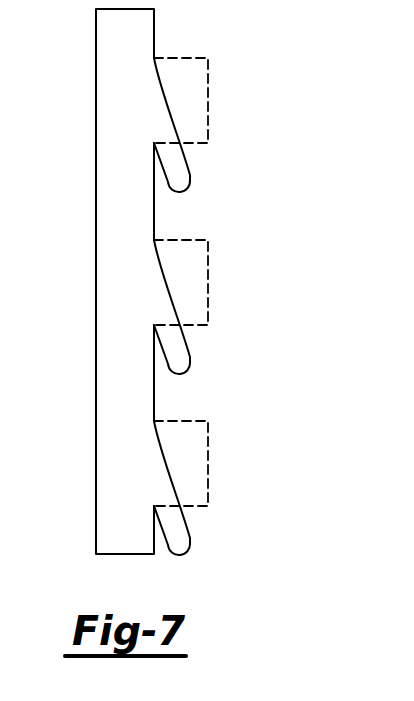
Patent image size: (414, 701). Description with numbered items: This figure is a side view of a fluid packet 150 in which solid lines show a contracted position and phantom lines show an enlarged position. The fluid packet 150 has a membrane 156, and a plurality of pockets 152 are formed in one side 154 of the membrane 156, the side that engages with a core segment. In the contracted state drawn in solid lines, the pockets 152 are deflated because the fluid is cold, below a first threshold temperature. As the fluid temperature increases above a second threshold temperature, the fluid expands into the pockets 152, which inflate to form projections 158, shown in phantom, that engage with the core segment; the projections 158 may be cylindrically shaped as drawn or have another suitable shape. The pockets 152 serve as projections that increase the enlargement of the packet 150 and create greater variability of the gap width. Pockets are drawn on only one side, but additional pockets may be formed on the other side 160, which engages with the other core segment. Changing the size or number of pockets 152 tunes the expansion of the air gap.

The fluid packet 150 is at (96, 87).
The pockets 152 is at (185, 165).
The side 154 is at (154, 390).
The membrane 156 is at (96, 447).
The projections 158 is at (208, 74).
The other side 160 is at (96, 267).